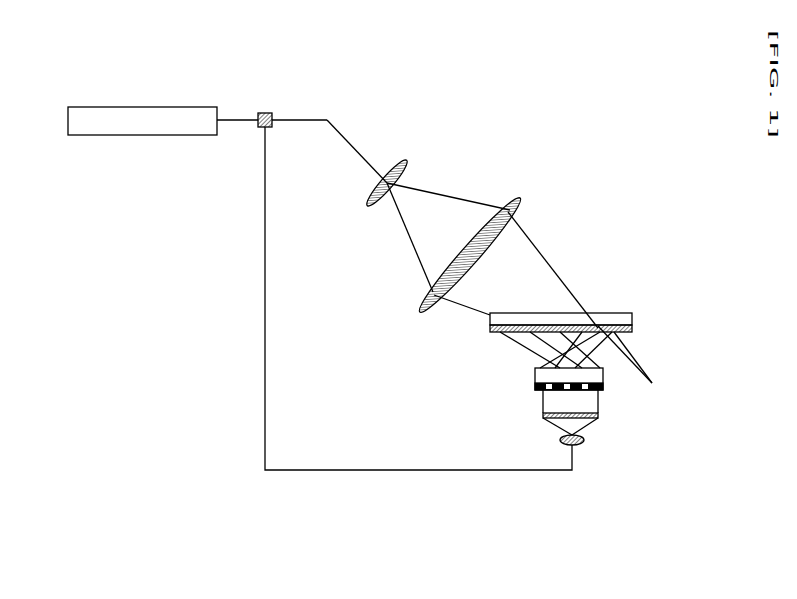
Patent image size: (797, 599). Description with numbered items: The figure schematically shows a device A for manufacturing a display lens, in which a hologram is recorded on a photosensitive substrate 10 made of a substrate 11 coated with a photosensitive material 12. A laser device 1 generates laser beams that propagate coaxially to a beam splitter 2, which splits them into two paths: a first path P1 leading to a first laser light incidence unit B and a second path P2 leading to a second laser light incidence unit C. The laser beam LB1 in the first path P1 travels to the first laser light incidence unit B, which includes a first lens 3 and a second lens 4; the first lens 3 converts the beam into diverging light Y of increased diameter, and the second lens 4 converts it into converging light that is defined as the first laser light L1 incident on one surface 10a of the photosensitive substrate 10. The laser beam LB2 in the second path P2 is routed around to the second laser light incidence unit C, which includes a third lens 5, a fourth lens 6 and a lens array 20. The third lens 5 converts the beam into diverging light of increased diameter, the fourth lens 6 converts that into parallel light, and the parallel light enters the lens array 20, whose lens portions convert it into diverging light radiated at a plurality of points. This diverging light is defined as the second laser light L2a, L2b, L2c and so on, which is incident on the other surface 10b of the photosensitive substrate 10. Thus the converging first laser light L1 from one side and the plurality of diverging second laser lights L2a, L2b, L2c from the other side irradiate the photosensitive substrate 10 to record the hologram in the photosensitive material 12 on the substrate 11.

The laser device 1 is at (103, 136).
The beam splitter 2 is at (268, 113).
The first lens 3 is at (404, 160).
The second lens 4 is at (518, 200).
The third lens 5 is at (580, 448).
The fourth lens 6 is at (600, 418).
The photosensitive substrate 10 is at (599, 313).
The one surface of the photosensitive substrate 10a is at (606, 313).
The other surface of the photosensitive substrate 10b is at (500, 331).
The substrate 11 is at (634, 317).
The photosensitive material 12 is at (634, 328).
The lens array 20 is at (612, 395).
The laser beam in first path LB1 is at (335, 118).
The laser beam in second path LB2 is at (265, 408).
The first laser light L1 is at (560, 276).
The second laser light L2a is at (556, 350).
The second laser light L2b is at (622, 352).
The second laser light L2c is at (622, 336).
The first path P1 is at (365, 140).
The second path P2 is at (360, 490).
The device for manufacturing a display lens A is at (119, 51).
The first laser light incidence unit B is at (418, 126).
The second laser light incidence unit C is at (668, 408).
The diverging light Y is at (413, 251).